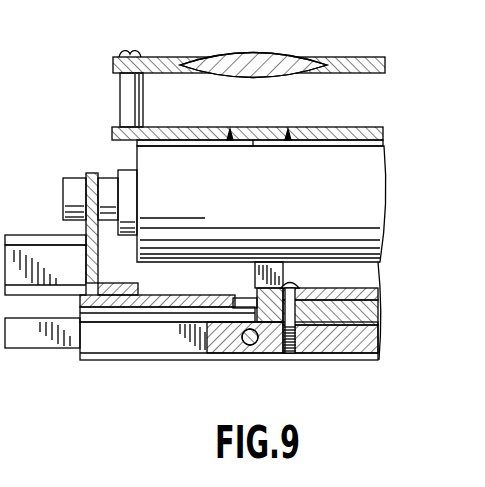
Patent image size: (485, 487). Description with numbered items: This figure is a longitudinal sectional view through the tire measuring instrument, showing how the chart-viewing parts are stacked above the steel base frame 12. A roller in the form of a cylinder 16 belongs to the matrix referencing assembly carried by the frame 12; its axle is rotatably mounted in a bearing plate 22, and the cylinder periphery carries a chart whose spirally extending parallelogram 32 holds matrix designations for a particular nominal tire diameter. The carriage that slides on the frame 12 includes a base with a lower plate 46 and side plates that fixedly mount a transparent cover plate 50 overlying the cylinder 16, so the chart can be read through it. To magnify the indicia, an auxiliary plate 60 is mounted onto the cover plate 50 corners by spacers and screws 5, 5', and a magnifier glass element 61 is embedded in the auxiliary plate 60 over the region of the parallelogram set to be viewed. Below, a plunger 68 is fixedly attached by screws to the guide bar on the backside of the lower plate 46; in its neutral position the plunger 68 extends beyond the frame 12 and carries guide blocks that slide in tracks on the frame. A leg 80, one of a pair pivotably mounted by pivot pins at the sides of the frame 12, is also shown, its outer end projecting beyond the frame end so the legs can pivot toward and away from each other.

The screw 5 is at (114, 100).
The screw 5' is at (142, 38).
The base frame 12 is at (192, 297).
The cylinder 16 is at (271, 194).
The bearing plate 22 is at (90, 174).
The parallelogram 32 is at (232, 128).
The lower plate 46 is at (350, 293).
The cover plate 50 is at (212, 127).
The auxiliary plate 60 is at (360, 57).
The magnifier glass element 61 is at (265, 55).
The plunger 68 is at (138, 338).
The leg 80 is at (40, 236).